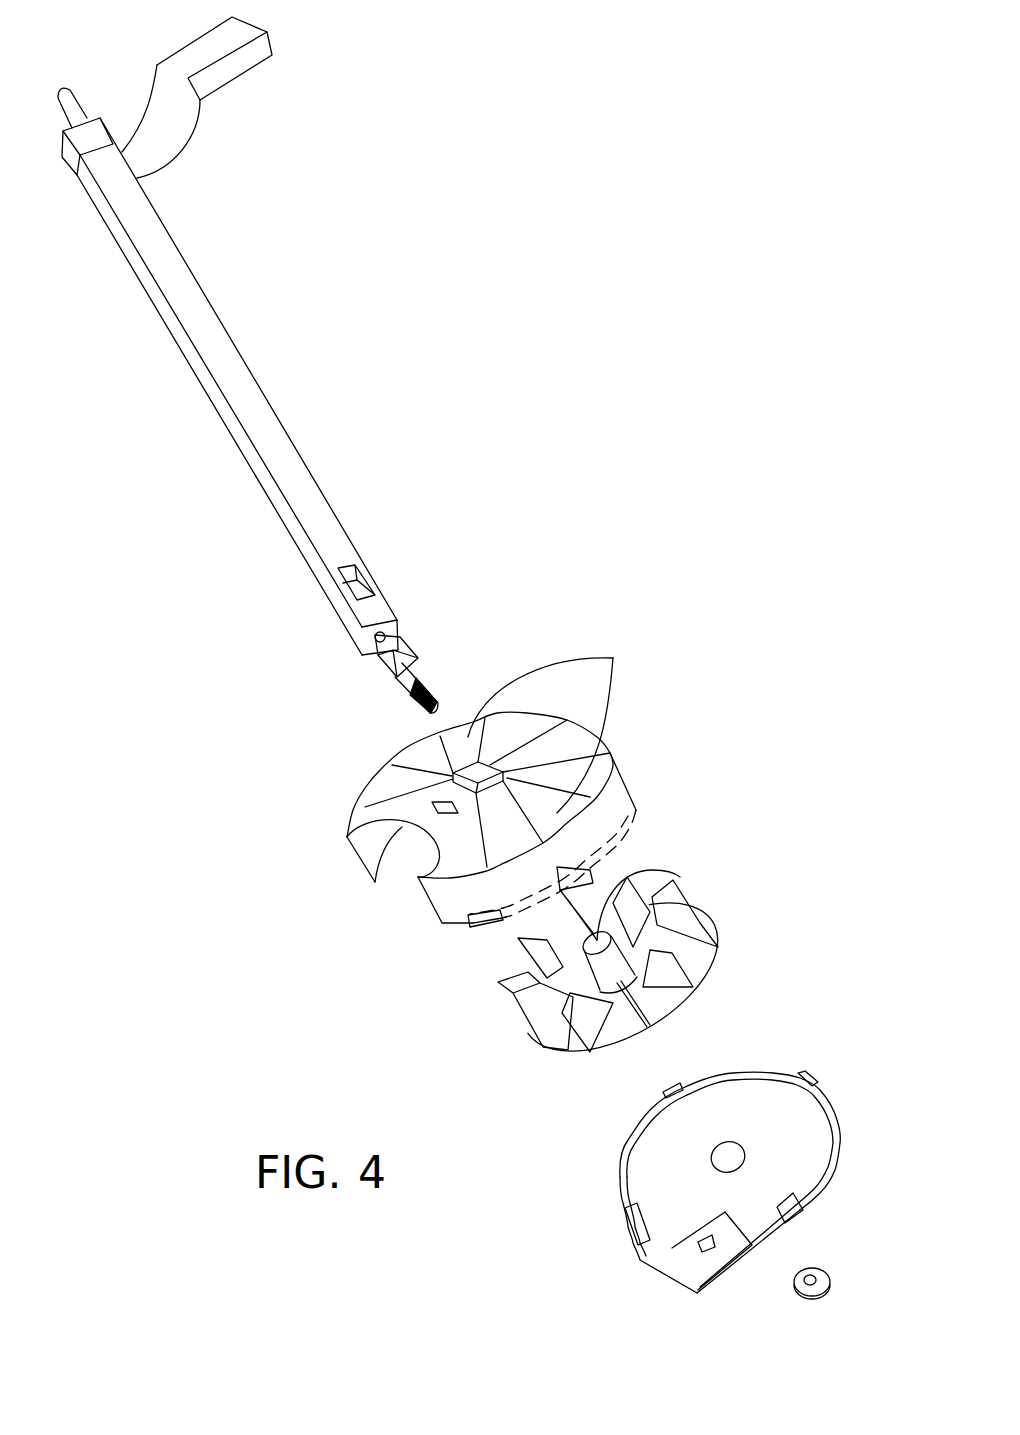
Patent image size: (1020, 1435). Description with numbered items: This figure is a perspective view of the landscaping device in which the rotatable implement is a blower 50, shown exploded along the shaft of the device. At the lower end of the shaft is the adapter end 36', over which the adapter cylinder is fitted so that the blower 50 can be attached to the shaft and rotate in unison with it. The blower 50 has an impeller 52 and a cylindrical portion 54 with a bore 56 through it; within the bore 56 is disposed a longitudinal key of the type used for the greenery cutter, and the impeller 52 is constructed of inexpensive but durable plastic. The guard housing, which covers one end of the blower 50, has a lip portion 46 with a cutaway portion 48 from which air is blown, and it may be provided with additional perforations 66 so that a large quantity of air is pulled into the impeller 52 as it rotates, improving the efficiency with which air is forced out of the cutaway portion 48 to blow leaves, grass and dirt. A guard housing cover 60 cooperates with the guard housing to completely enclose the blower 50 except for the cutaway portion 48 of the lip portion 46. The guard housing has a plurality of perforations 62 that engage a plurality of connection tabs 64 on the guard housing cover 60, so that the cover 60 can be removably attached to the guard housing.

The adapter end 36' is at (295, 365).
The lip portion 46 is at (635, 811).
The cutaway portion 48 is at (410, 858).
The blower 50 is at (497, 983).
The impeller 52 is at (687, 937).
The cylindrical portion 54 is at (653, 908).
The bore 56 is at (625, 878).
The guard housing cover 60 is at (753, 1070).
The perforations 62 is at (482, 926).
The connection tabs 64 is at (810, 1208).
The additional perforations 66 is at (565, 717).